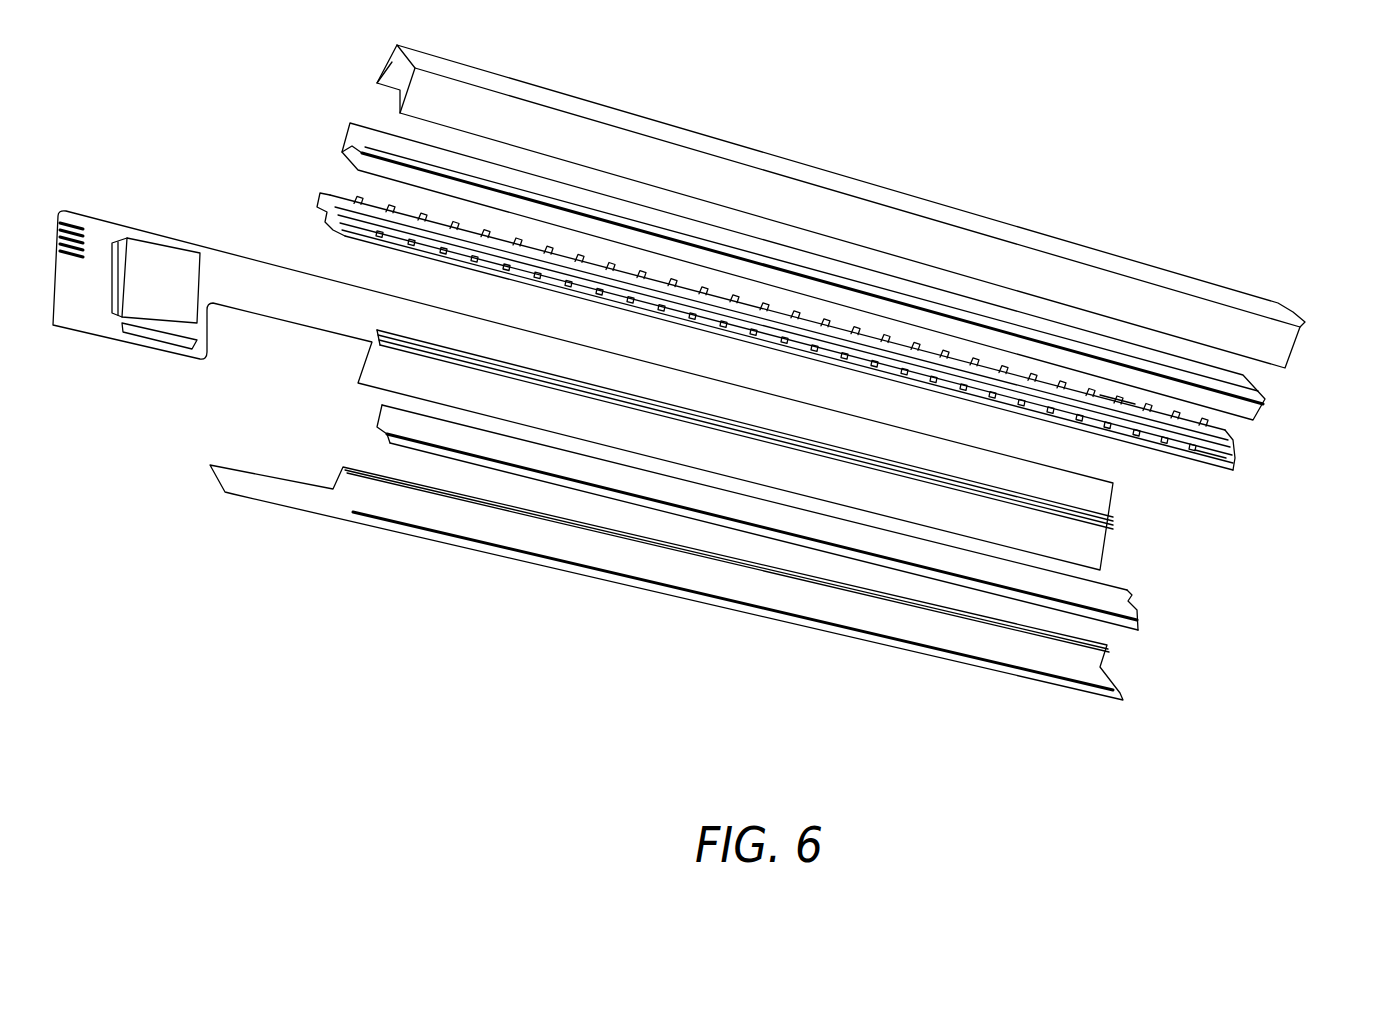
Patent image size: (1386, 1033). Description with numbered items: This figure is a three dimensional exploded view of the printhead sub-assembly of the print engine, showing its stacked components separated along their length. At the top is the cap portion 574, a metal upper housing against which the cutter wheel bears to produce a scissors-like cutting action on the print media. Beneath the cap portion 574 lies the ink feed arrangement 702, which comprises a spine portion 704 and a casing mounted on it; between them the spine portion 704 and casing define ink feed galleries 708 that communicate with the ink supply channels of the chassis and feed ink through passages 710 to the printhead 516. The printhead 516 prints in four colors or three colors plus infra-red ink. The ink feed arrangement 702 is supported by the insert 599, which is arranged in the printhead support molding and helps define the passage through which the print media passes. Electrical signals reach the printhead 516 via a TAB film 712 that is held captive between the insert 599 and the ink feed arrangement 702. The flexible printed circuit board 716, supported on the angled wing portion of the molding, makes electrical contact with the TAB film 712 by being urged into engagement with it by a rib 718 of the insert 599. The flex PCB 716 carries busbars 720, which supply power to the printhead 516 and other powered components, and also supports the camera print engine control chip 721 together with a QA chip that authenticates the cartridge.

The cap portion 574 is at (1115, 264).
The spine portion 704 is at (1247, 374).
The ink feed arrangement 702 is at (1236, 445).
The passages 710 is at (1123, 423).
The ink feed galleries 708 is at (1201, 457).
The flexible printed circuit board 716 is at (1113, 567).
The busbars 720 is at (1114, 527).
The camera print engine control chip 721 is at (166, 263).
The printhead 516 is at (387, 436).
The TAB film 712 is at (1128, 609).
The insert 599 is at (957, 670).
The rib 718 is at (1115, 664).